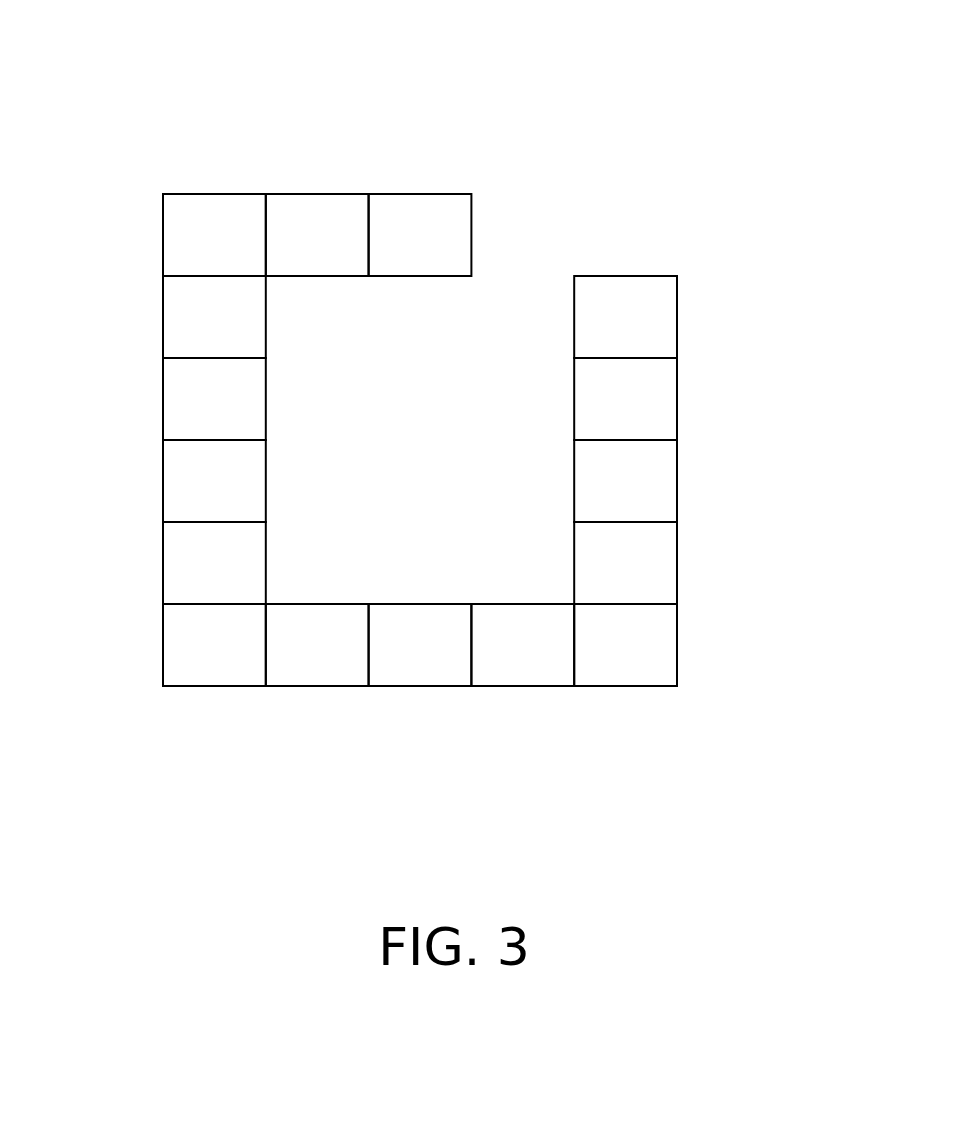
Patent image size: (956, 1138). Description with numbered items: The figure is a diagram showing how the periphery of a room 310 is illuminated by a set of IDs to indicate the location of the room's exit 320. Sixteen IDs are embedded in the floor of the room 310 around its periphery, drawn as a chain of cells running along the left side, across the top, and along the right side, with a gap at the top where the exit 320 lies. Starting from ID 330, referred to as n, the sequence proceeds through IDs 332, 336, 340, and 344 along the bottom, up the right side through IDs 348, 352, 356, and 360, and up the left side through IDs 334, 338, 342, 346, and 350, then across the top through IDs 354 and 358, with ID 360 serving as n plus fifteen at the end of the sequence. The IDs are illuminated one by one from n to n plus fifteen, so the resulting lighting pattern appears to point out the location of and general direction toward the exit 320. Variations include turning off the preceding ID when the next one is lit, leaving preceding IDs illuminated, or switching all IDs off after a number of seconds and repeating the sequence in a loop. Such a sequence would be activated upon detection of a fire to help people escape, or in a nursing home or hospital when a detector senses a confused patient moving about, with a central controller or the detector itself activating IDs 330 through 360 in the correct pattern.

The room 310 is at (148, 120).
The exit 320 is at (532, 257).
The ID 330 is at (215, 686).
The ID 332 is at (318, 686).
The ID 334 is at (163, 563).
The ID 336 is at (420, 686).
The ID 338 is at (163, 481).
The ID 340 is at (523, 686).
The ID 342 is at (163, 399).
The ID 344 is at (626, 686).
The ID 346 is at (163, 317).
The ID 348 is at (677, 563).
The ID 350 is at (163, 235).
The ID 352 is at (677, 481).
The ID 354 is at (318, 194).
The ID 356 is at (677, 399).
The ID 358 is at (419, 194).
The ID 360 is at (677, 317).